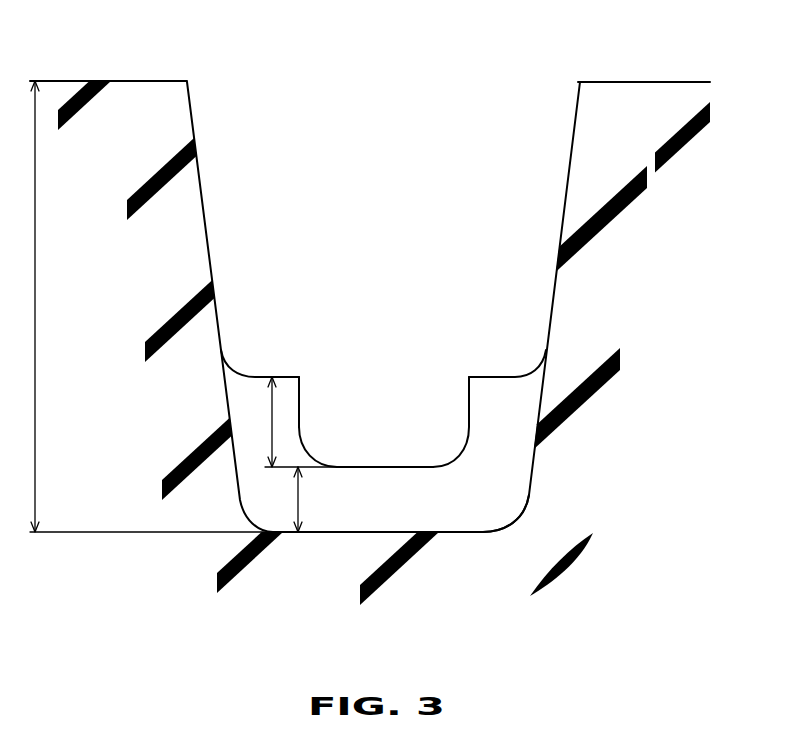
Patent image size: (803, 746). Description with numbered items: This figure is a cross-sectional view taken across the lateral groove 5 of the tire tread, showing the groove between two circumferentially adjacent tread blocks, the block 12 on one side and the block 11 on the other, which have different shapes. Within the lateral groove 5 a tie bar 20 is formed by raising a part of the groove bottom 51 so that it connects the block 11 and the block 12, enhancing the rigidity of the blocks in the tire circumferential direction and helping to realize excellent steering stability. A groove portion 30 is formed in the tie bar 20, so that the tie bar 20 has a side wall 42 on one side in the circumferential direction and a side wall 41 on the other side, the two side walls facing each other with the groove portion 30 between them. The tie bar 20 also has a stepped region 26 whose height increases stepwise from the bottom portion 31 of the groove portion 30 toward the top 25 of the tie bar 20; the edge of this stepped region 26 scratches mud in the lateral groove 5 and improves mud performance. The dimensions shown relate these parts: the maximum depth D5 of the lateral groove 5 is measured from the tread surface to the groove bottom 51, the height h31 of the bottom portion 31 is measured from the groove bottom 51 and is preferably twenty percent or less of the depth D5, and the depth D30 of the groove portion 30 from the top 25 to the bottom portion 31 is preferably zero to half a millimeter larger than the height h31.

The lateral groove 5 is at (348, 141).
The block 11 is at (623, 142).
The block 12 is at (122, 122).
The tie bar 20 is at (503, 398).
The top 25 is at (262, 373).
The stepped region 26 is at (282, 420).
The groove portion 30 is at (373, 415).
The bottom portion 31 is at (417, 467).
The side wall 41 is at (466, 405).
The side wall 42 is at (300, 392).
The groove bottom 51 is at (478, 530).
The maximum depth of the lateral groove D5 is at (151, 306).
The depth of the groove portion D30 is at (272, 422).
The height of the bottom portion h31 is at (324, 499).